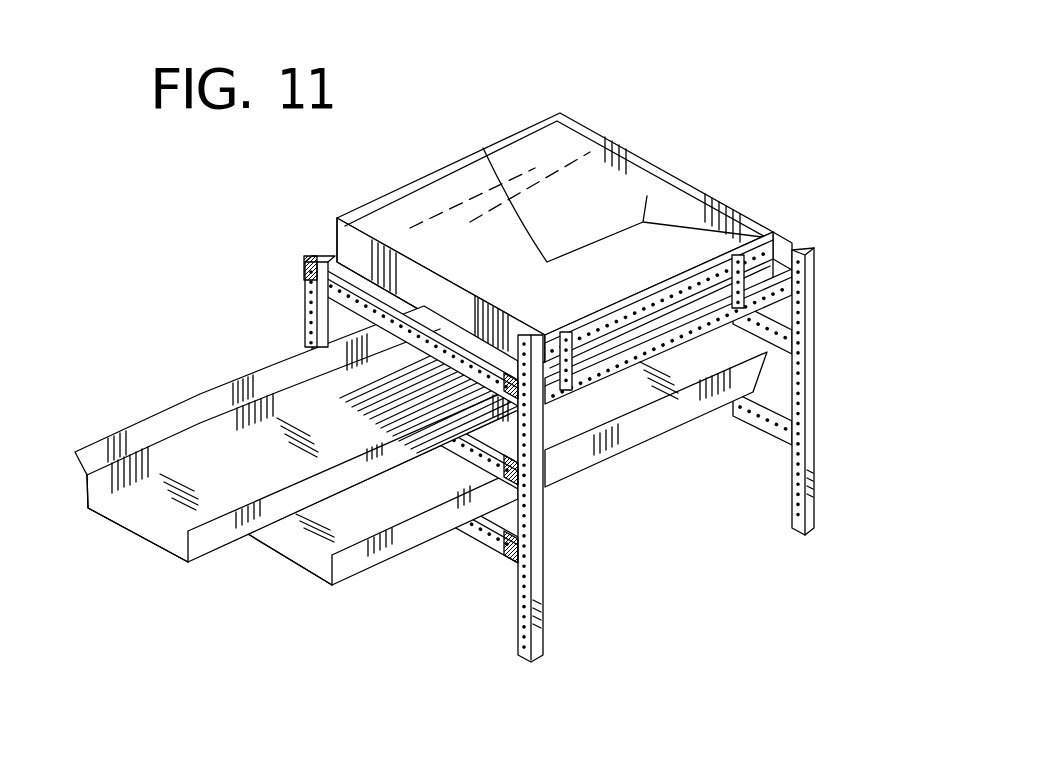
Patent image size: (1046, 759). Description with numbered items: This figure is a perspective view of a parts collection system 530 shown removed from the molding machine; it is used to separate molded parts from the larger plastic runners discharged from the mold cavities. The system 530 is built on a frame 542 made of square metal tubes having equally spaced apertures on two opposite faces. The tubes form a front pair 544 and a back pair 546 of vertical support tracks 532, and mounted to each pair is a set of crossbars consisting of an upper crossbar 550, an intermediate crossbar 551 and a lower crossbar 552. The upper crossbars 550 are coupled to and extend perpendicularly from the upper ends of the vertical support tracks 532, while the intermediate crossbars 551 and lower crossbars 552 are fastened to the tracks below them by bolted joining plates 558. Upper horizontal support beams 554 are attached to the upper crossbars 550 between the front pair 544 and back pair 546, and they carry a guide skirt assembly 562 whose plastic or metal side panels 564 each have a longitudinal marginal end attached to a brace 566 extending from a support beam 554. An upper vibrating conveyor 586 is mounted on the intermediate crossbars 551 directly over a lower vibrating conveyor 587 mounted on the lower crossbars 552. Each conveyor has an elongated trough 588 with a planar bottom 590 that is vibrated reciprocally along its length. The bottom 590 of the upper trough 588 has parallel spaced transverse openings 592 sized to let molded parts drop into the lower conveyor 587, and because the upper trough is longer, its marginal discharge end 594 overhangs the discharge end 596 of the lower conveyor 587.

The parts collection system 530 is at (205, 255).
The vertical support tracks 532 is at (305, 320).
The frame 542 is at (752, 186).
The front pair of vertical support tracks 544 is at (460, 640).
The back pair of vertical support tracks 546 is at (838, 371).
The upper crossbar 550 is at (330, 262).
The intermediate crossbar 551 is at (470, 446).
The lower crossbar 552 is at (480, 553).
The upper horizontal support beam 554 is at (608, 368).
The bolted joining plate 558 is at (313, 270).
The guide skirt assembly 562 is at (522, 106).
The side panel 564 is at (570, 160).
The brace 566 is at (740, 250).
The upper vibrating conveyor 586 is at (210, 398).
The lower vibrating conveyor 587 is at (362, 578).
The trough 588 is at (303, 569).
The planar bottom 590 is at (338, 522).
The transverse openings 592 is at (352, 407).
The marginal discharge end 594 is at (148, 528).
The discharge end 596 is at (270, 541).